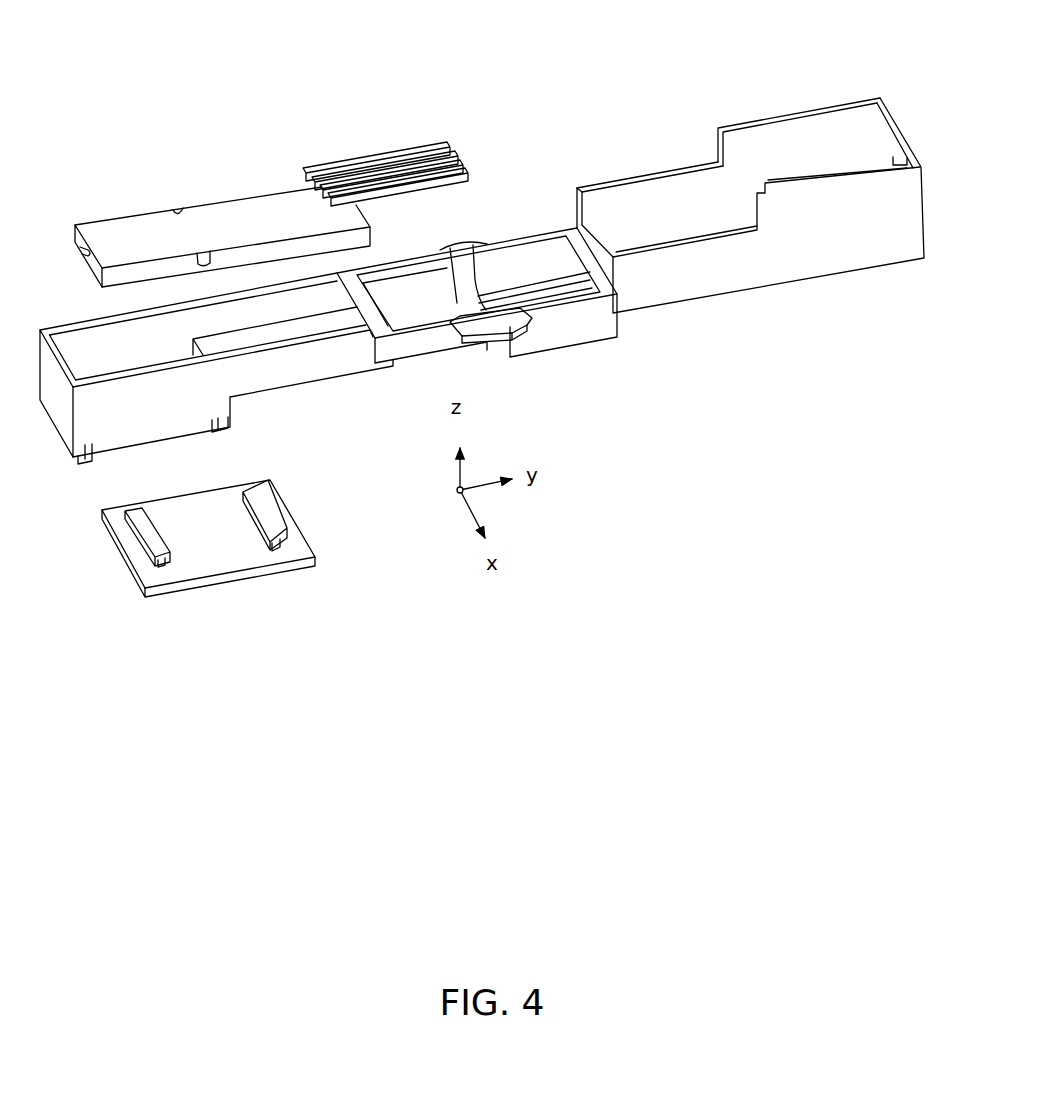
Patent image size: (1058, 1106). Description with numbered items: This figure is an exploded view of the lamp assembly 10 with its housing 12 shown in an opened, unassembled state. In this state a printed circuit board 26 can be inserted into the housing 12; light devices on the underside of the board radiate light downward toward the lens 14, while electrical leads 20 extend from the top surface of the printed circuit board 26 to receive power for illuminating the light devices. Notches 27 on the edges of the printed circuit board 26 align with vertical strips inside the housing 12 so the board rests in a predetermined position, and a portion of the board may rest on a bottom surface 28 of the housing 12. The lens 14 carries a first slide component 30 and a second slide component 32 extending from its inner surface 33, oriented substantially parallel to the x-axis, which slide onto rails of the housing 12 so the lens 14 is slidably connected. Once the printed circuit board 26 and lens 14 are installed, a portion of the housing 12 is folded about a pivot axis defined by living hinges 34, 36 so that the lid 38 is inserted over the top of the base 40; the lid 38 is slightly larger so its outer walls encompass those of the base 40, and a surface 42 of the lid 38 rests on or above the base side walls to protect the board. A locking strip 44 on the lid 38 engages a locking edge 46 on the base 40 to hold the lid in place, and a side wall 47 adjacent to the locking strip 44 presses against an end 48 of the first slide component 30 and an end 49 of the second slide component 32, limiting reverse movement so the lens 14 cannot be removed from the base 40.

The lamp assembly 10 is at (743, 408).
The housing 12 is at (490, 269).
The lens 14 is at (213, 560).
The electrical leads 20 is at (449, 144).
The printed circuit board 26 is at (199, 210).
The notches 27 is at (178, 207).
The bottom surface 28 is at (263, 327).
The first slide component 30 is at (122, 573).
The second slide component 32 is at (304, 548).
The inner surface 33 is at (185, 505).
The living hinge 34 is at (497, 333).
The living hinge 36 is at (463, 247).
The lid 38 is at (763, 179).
The base 40 is at (45, 420).
The surface 42 is at (670, 237).
The locking strip 44 is at (876, 170).
The locking edge 46 is at (148, 432).
The side wall 47 is at (862, 250).
The end 48 is at (167, 562).
The end 49 is at (278, 541).